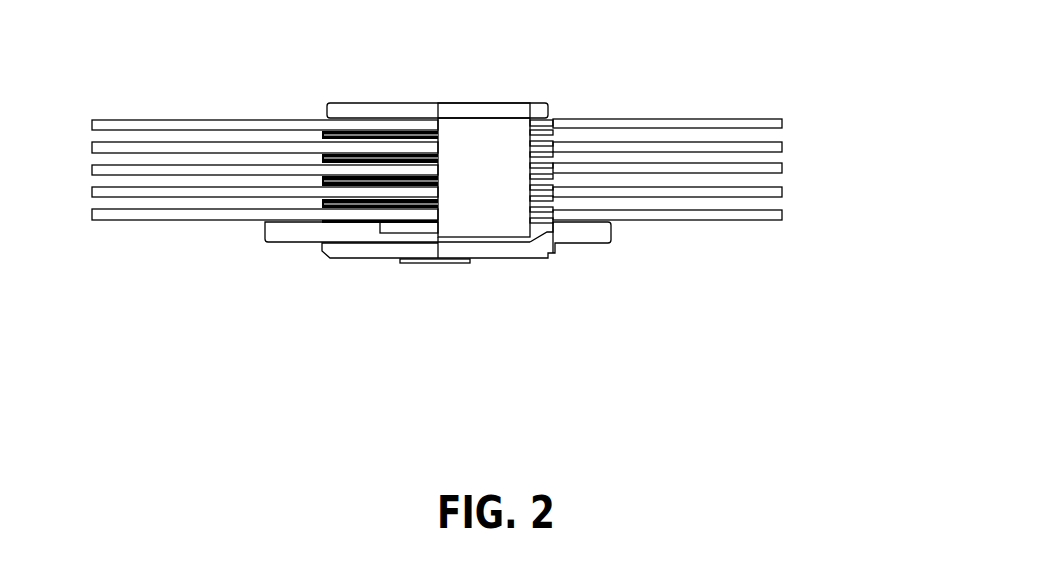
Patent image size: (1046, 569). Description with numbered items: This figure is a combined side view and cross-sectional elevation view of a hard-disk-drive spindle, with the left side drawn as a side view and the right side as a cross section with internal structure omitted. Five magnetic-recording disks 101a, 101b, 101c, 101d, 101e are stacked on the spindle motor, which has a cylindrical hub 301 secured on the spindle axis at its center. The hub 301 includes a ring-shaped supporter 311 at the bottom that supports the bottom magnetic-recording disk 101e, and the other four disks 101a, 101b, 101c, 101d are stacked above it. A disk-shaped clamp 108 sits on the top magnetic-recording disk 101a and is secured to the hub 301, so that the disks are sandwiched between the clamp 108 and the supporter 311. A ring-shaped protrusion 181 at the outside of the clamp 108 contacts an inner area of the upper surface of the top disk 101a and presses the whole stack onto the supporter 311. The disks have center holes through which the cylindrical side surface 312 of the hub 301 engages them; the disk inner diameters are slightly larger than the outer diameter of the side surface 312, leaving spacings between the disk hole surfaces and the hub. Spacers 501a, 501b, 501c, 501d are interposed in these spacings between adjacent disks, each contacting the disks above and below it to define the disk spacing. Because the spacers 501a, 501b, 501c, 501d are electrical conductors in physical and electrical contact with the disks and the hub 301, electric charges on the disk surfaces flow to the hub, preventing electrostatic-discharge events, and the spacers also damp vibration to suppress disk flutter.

The magnetic-recording disk 101a is at (694, 119).
The magnetic-recording disk 101b is at (782, 148).
The magnetic-recording disk 101c is at (782, 173).
The magnetic-recording disk 101d is at (782, 195).
The magnetic-recording disk 101e is at (747, 220).
The clamp 108 is at (492, 103).
The ring-shaped protrusion 181 is at (545, 137).
The hub 301 is at (527, 237).
The supporter 311 is at (553, 232).
The cylindrical side surface 312 is at (530, 178).
The spacer 501a is at (327, 135).
The spacer 501b is at (558, 148).
The spacer 501c is at (554, 177).
The spacer 501d is at (553, 189).